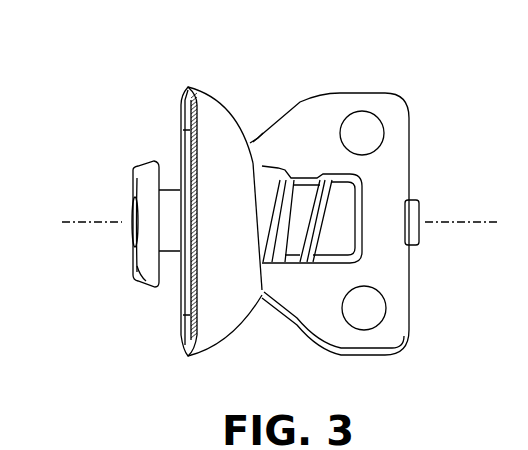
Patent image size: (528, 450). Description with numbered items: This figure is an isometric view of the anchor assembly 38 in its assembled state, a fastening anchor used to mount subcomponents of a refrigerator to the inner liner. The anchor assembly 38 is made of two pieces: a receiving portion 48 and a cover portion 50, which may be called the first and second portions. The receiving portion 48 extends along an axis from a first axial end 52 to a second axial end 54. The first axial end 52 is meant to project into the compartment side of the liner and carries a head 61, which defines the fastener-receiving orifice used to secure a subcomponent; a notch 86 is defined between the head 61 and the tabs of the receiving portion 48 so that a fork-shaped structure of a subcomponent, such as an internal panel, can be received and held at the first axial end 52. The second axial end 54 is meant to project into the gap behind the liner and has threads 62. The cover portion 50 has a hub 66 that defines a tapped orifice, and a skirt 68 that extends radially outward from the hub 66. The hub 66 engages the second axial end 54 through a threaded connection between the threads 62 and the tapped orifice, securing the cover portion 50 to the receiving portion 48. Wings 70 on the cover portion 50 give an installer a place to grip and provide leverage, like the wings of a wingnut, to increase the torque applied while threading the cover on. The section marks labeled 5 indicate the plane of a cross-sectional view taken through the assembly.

The section line 5- 5 is at (62, 222).
The anchor assembly 38 is at (368, 56).
The receiving portion 48 is at (148, 163).
The cover portion 50 is at (408, 125).
The first axial end 52 is at (140, 286).
The second axial end 54 is at (338, 227).
The head 61 is at (148, 257).
The threads 62 is at (307, 263).
The hub 66 is at (265, 180).
The skirt 68 is at (210, 310).
The wings 70 is at (341, 110).
The notch 86 is at (168, 173).